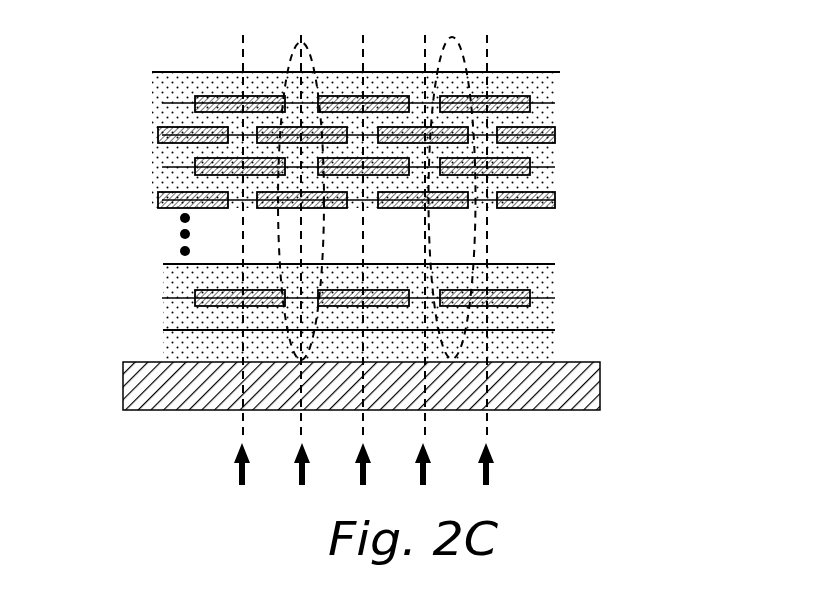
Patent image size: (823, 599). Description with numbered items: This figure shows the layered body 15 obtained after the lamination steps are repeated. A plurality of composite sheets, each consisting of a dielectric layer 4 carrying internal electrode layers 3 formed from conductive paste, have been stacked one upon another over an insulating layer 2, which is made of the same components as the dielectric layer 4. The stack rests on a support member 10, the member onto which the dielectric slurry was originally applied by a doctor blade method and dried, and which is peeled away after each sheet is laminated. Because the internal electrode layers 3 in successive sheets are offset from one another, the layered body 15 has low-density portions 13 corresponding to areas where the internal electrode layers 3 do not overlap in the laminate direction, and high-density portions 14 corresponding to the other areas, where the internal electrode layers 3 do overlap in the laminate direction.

The insulating layer 2 is at (175, 310).
The internal electrode layers 3 is at (522, 207).
The dielectric layer 4 is at (537, 152).
The support member 10 is at (512, 397).
The low-density portions 13 is at (295, 58).
The high-density portions 14 is at (455, 43).
The layered body 15 is at (670, 61).